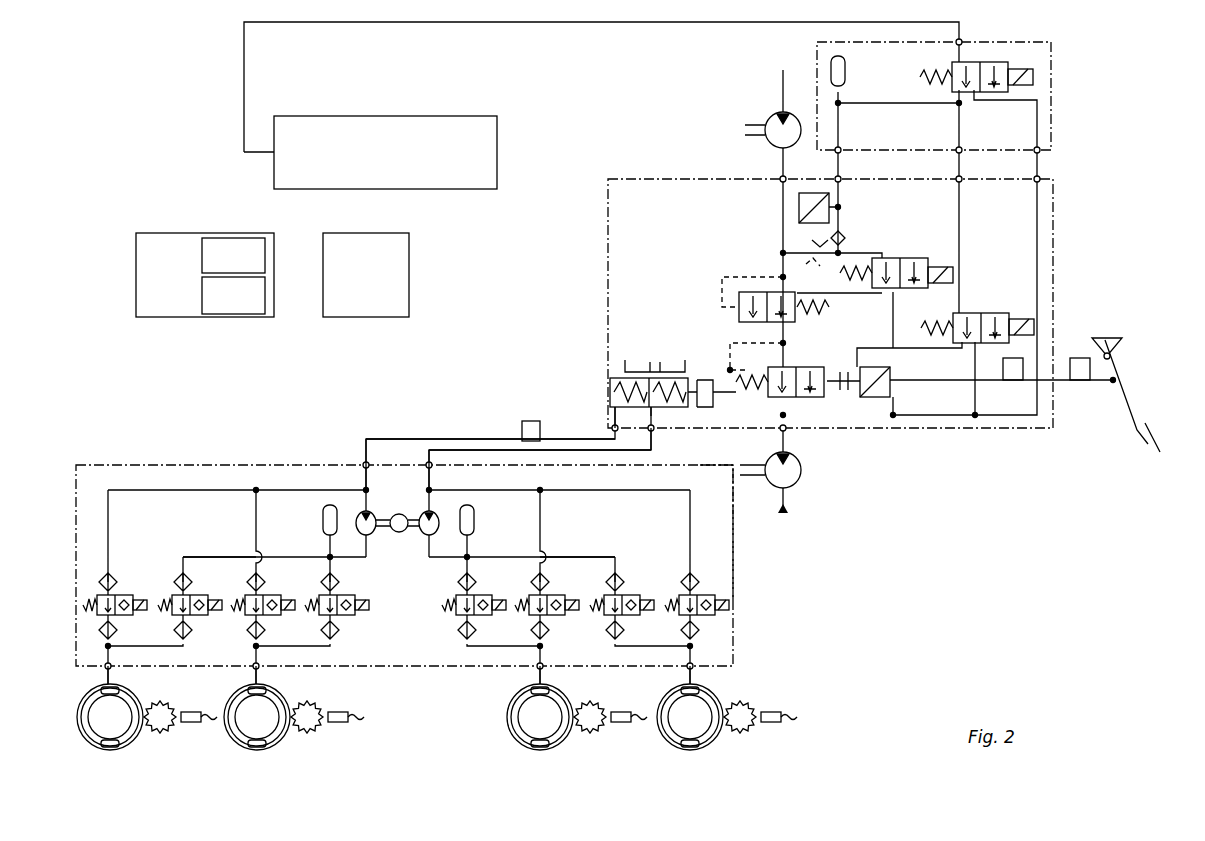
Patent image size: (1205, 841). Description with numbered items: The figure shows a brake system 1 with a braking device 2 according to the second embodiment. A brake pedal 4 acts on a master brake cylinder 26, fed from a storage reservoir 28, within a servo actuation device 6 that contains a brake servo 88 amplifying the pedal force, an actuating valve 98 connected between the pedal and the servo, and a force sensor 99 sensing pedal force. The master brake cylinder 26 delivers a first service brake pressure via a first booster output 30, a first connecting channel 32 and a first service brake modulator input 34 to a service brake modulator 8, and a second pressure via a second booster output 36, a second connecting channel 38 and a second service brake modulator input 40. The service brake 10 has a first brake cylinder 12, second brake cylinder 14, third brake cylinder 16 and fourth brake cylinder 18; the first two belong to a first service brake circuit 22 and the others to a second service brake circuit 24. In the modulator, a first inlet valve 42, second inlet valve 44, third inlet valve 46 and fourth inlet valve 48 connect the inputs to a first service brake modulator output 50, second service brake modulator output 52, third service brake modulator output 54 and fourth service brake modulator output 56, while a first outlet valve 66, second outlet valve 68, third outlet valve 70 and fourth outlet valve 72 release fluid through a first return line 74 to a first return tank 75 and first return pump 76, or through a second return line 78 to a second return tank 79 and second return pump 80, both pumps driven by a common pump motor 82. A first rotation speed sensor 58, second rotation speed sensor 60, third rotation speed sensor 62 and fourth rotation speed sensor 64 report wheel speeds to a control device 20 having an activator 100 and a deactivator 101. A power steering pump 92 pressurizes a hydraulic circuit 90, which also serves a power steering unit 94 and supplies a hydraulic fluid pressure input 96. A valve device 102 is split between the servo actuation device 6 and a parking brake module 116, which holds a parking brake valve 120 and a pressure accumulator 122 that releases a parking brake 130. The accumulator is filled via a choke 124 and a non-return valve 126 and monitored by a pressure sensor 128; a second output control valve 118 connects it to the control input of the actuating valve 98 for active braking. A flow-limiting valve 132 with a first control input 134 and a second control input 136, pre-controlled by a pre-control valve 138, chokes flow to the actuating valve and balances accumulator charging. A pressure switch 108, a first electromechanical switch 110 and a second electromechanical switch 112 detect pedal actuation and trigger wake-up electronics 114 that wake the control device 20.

The brake system 1 is at (1112, 51).
The braking device 2 is at (613, 137).
The brake pedal 4 is at (1125, 405).
The servo actuation device 6 is at (1055, 262).
The service brake modulator 8 is at (737, 556).
The service brake 10 is at (796, 688).
The first brake cylinder 12 is at (130, 692).
The second brake cylinder 14 is at (277, 692).
The third brake cylinder 16 is at (560, 692).
The fourth brake cylinder 18 is at (710, 692).
The control device 20 is at (205, 275).
The first service brake circuit 22 is at (172, 444).
The second service brake circuit 24 is at (722, 452).
The master brake cylinder 26 is at (657, 409).
The storage reservoir 28 is at (650, 356).
The first booster output 30 is at (612, 425).
The first connecting channel 32 is at (400, 439).
The first service brake modulator input 34 is at (364, 464).
The second booster output 36 is at (655, 437).
The second connecting channel 38 is at (470, 449).
The second service brake modulator input 40 is at (431, 468).
The first inlet valve 42 is at (116, 596).
The second inlet valve 44 is at (264, 596).
The third inlet valve 46 is at (548, 596).
The fourth inlet valve 48 is at (698, 596).
The first service brake modulator output 50 is at (106, 676).
The second service brake modulator output 52 is at (254, 676).
The third service brake modulator output 54 is at (537, 676).
The fourth service brake modulator output 56 is at (687, 676).
The first rotation speed sensor 58 is at (171, 729).
The second rotation speed sensor 60 is at (318, 729).
The third rotation speed sensor 62 is at (601, 729).
The fourth rotation speed sensor 64 is at (751, 729).
The first outlet valve 66 is at (191, 596).
The second outlet valve 68 is at (338, 596).
The third outlet valve 70 is at (475, 596).
The fourth outlet valve 72 is at (623, 596).
The first return line 74 is at (197, 557).
The first return tank 75 is at (326, 531).
The first return pump 76 is at (369, 536).
The second return line 78 is at (568, 557).
The second return tank 79 is at (469, 528).
The second return pump 80 is at (434, 534).
The pump motor 82 is at (400, 513).
The brake servo 88 is at (715, 356).
The hydraulic circuit 90 is at (783, 514).
The power steering pump 92 is at (787, 115).
The power steering unit 94 is at (801, 473).
The hydraulic fluid pressure input 96 is at (779, 177).
The actuating valve 98 is at (797, 367).
The force sensor 99 is at (877, 398).
The activator 100 is at (233, 255).
The deactivator 101 is at (233, 295).
The valve device 102 is at (1084, 165).
The pressure switch 108 is at (522, 426).
The first electromechanical switch 110 is at (1010, 381).
The second electromechanical switch 112 is at (1080, 358).
The wake-up electronics 114 is at (366, 275).
The parking brake module 116 is at (1053, 93).
The second output control valve 118 is at (978, 312).
The parking brake valve 120 is at (967, 62).
The pressure accumulator 122 is at (846, 80).
The choke 124 is at (826, 272).
The non-return valve 126 is at (846, 237).
The pressure sensor 128 is at (798, 213).
The parking brake 130 is at (601, 105).
The flow-limiting valve 132 is at (752, 290).
The first control input 134 is at (738, 307).
The second control input 136 is at (815, 298).
The pre-control valve 138 is at (925, 256).